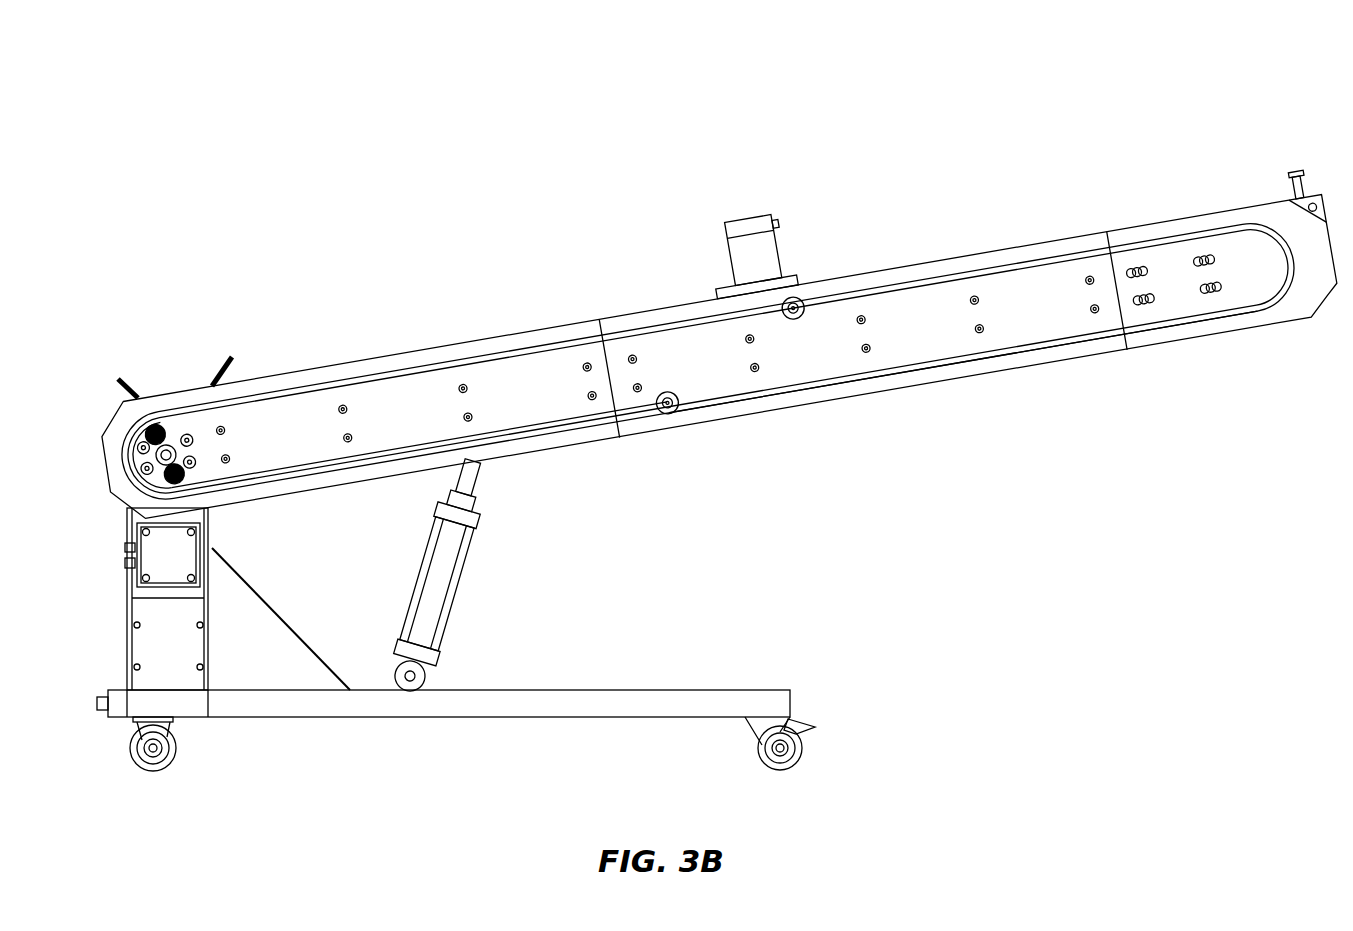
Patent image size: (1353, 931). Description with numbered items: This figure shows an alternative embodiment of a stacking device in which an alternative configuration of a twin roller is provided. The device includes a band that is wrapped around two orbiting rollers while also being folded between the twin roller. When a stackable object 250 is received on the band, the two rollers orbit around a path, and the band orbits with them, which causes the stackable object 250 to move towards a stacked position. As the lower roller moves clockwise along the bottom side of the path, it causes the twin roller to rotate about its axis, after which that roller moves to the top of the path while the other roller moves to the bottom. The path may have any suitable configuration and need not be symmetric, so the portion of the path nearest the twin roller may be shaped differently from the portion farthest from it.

The stackable object 250 is at (218, 365).